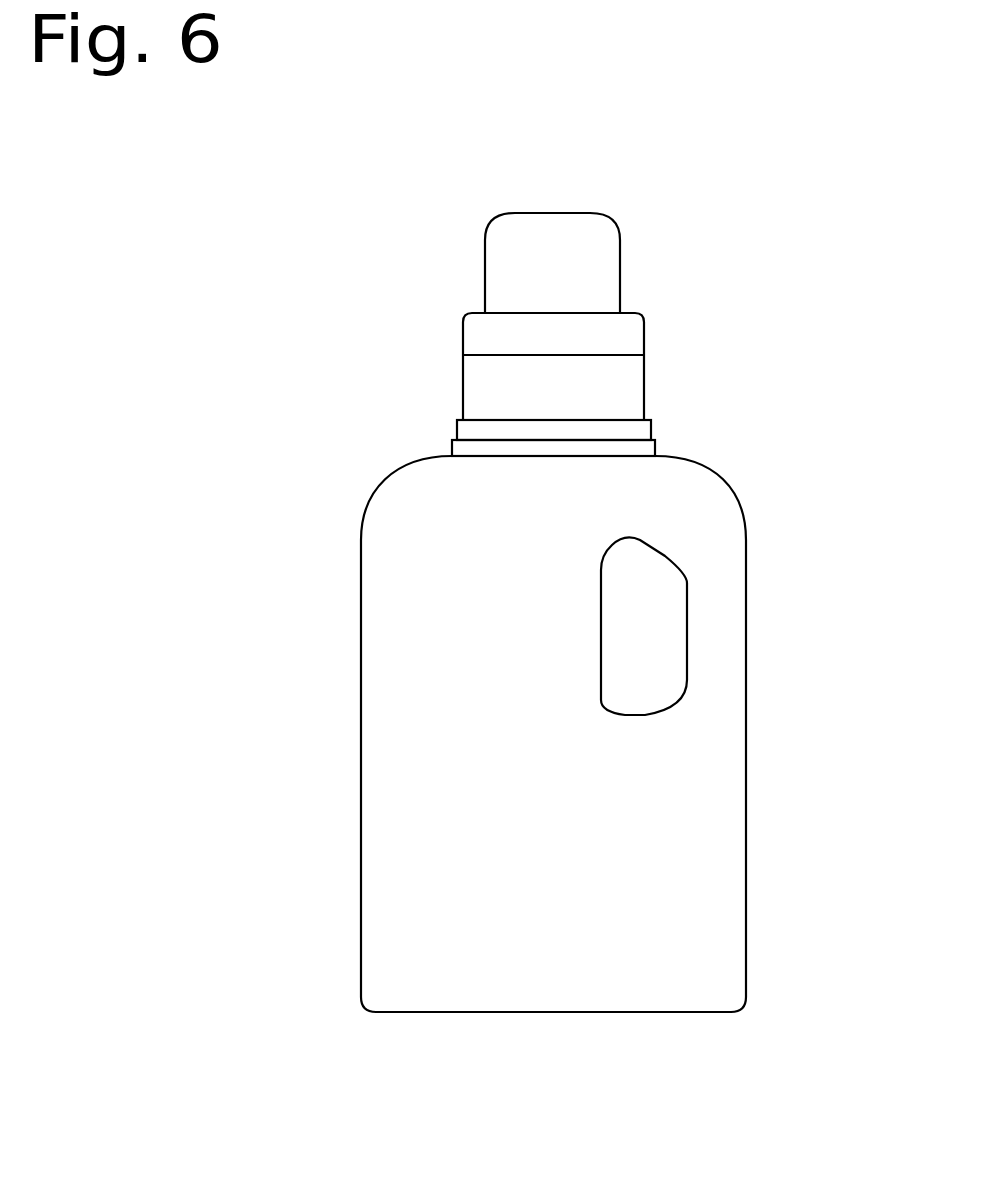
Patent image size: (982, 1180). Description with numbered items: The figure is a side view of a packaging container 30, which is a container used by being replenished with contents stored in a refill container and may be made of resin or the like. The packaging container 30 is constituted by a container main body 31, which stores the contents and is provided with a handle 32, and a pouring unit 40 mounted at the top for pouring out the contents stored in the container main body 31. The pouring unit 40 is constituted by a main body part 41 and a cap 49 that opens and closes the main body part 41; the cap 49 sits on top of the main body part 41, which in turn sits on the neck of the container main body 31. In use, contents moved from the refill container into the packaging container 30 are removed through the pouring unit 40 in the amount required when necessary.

The packaging container 30 is at (566, 130).
The container main body 31 is at (717, 800).
The handle 32 is at (730, 617).
The pouring unit 40 is at (461, 290).
The main body part 41 is at (648, 374).
The cap 49 is at (622, 262).